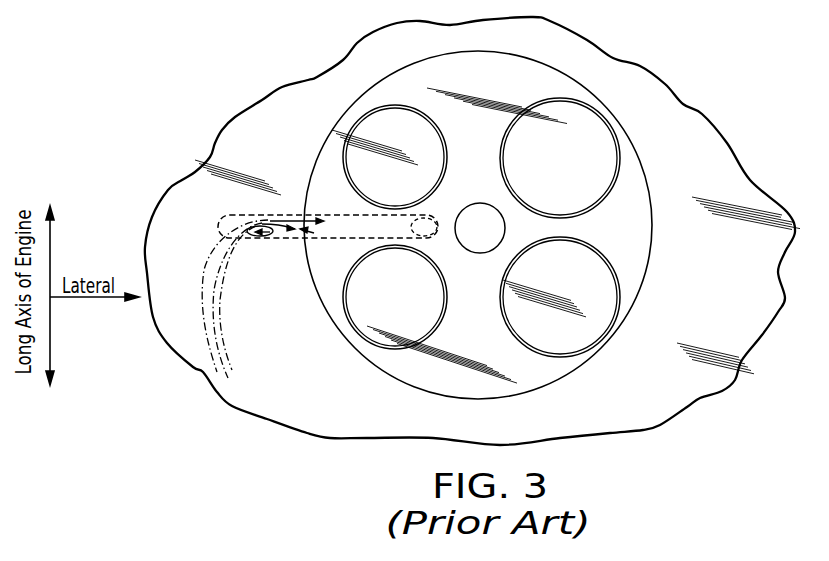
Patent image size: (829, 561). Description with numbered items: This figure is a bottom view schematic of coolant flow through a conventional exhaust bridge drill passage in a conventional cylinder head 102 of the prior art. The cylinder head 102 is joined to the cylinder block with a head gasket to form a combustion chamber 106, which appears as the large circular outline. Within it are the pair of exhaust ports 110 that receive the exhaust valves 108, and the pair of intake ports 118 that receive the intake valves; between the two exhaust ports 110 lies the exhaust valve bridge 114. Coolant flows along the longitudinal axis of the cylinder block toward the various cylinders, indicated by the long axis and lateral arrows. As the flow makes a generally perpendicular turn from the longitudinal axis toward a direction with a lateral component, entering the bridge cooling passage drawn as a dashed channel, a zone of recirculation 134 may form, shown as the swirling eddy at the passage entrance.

The cylinder head 102 is at (248, 360).
The combustion chamber 106 is at (460, 153).
The exhaust valves 108 is at (380, 193).
The exhaust ports 110 is at (397, 103).
The exhaust valve bridge 114 is at (411, 244).
The intake ports 118 is at (543, 173).
The zone of recirculation 134 is at (259, 245).